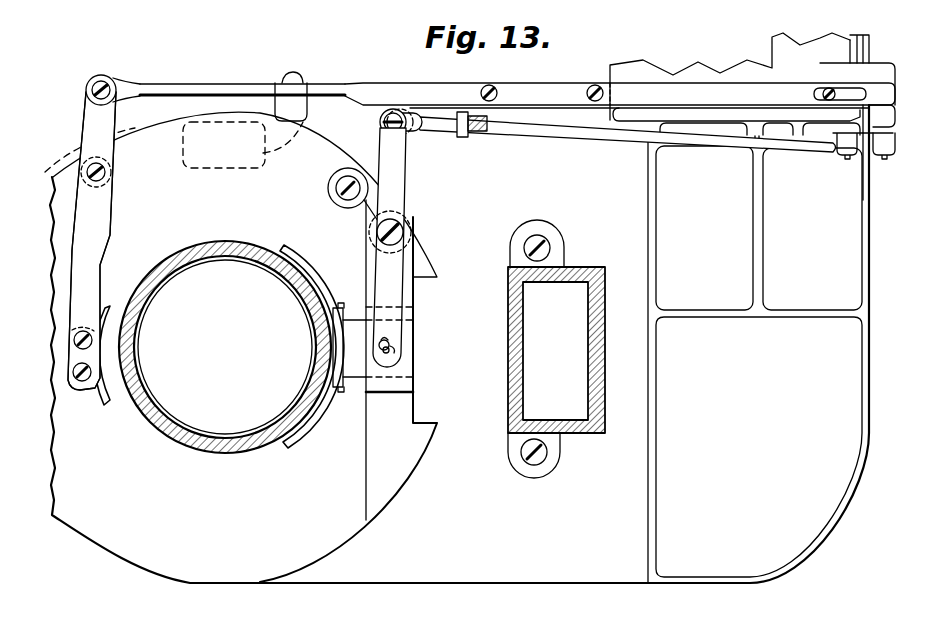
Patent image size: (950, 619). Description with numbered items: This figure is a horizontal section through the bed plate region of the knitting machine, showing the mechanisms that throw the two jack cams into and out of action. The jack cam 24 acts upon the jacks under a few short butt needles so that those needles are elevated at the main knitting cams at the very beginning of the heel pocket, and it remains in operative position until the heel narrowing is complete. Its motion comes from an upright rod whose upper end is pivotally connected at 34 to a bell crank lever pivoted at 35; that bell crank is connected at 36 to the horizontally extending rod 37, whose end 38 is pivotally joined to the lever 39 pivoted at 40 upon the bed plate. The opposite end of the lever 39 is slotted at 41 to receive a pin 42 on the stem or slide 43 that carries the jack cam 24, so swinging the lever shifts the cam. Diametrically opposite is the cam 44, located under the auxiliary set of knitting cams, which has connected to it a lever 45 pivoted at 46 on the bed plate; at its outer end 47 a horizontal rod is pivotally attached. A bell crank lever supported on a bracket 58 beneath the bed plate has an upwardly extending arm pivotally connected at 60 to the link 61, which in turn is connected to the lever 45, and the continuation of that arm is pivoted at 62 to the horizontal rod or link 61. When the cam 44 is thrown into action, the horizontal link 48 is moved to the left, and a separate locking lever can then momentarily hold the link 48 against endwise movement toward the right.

The jack cam 24 is at (324, 271).
The pivotal connection 34 is at (885, 156).
The bell crank lever pivot 35 is at (862, 155).
The pivotal connection 36 is at (849, 155).
The horizontally extending rod 37 is at (613, 128).
The rod end 38 is at (406, 131).
The lever 39 is at (390, 165).
The lever pivot 40 is at (402, 232).
The slot 41 is at (390, 340).
The pin 42 is at (388, 353).
The stem or slide 43 is at (357, 365).
The cam 44 is at (112, 401).
The lever 45 is at (100, 224).
The lever pivot 46 is at (106, 169).
The pivotal connection 47 is at (95, 84).
The horizontal link 48 is at (402, 90).
The bracket 58 is at (303, 122).
The pivotal connection 60 is at (291, 77).
The link 61 is at (184, 90).
The pivotal connection 62 is at (304, 80).